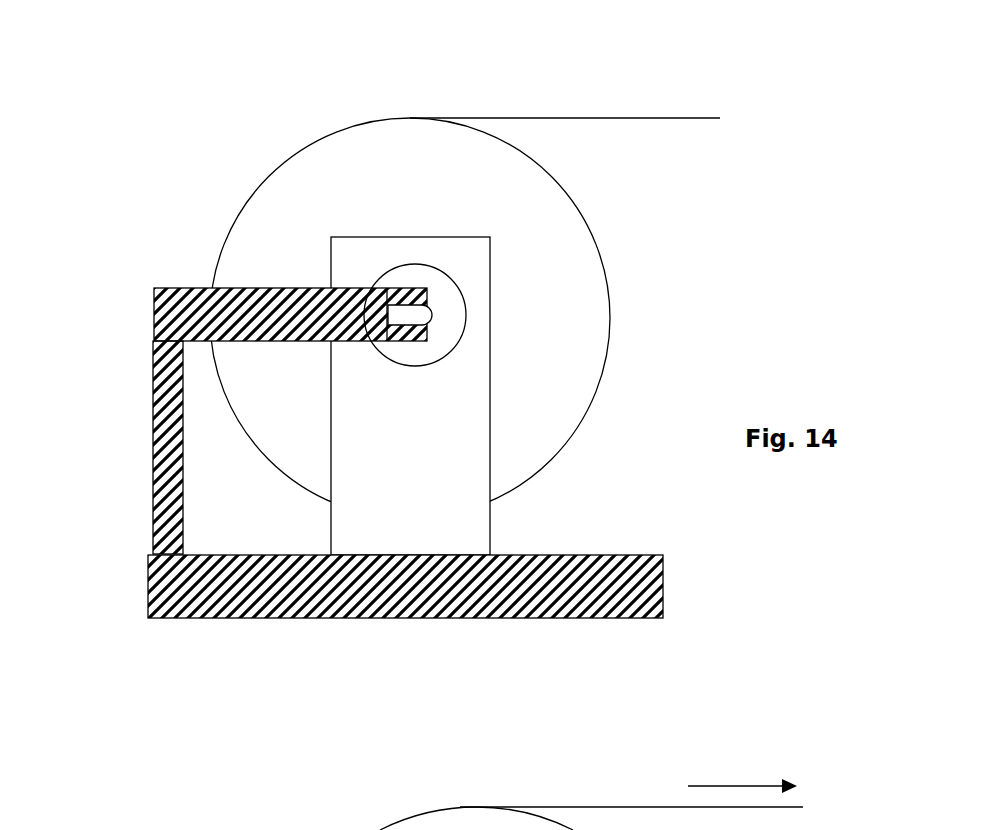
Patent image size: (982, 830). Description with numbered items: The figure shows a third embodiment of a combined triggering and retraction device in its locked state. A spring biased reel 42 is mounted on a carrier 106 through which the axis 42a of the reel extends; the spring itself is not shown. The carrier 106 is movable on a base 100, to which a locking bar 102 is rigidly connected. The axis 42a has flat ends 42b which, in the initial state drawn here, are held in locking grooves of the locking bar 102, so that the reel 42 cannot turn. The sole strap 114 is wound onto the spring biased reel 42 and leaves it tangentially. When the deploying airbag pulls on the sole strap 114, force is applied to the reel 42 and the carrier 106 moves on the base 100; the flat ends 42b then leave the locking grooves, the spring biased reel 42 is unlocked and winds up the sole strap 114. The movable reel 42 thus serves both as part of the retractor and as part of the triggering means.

The spring biased reel 42 is at (565, 306).
The axis 42a is at (428, 277).
The flat ends 42b is at (405, 315).
The base 100 is at (280, 610).
The locking bar 102 is at (240, 298).
The carrier 106 is at (402, 498).
The sole strap 114 is at (635, 118).